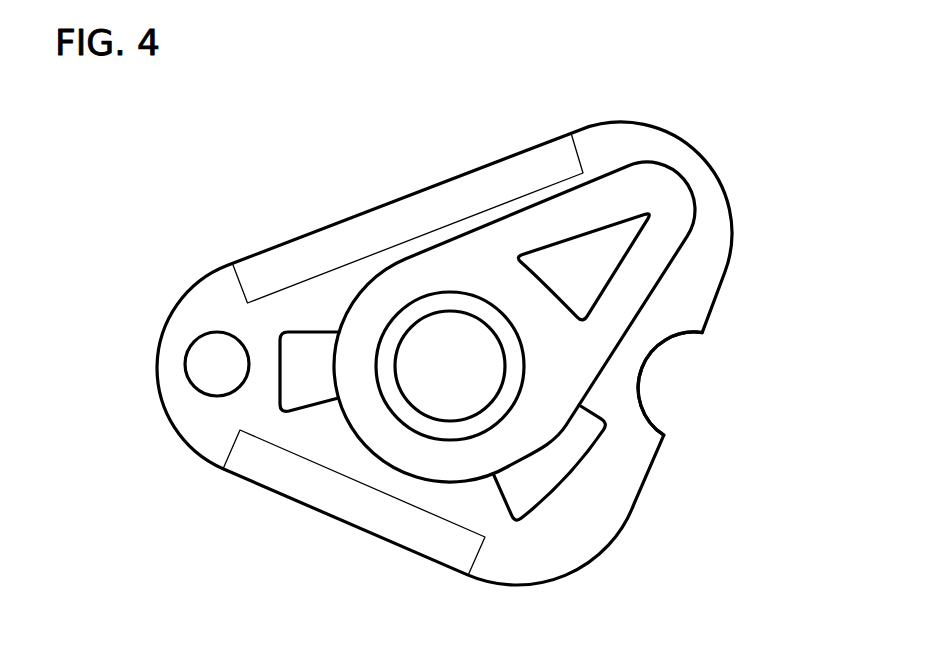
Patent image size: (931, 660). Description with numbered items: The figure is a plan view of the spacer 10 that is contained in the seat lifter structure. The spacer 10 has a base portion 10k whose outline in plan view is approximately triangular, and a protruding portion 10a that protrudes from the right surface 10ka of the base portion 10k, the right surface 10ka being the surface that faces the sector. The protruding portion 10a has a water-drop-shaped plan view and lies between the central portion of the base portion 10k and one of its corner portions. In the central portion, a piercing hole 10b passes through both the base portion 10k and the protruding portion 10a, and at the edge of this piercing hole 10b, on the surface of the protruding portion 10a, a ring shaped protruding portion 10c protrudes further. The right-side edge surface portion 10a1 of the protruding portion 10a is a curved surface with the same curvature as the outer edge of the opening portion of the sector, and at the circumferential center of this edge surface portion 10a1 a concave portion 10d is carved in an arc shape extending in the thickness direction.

The spacer 10 is at (422, 137).
The protruding portion 10a is at (608, 172).
The edge surface portion 10a1 is at (653, 292).
The piercing hole 10b is at (403, 343).
The ring shaped protruding portion 10c is at (500, 410).
The concave portion 10d is at (638, 387).
The base portion 10k is at (205, 277).
The right surface 10ka is at (207, 430).